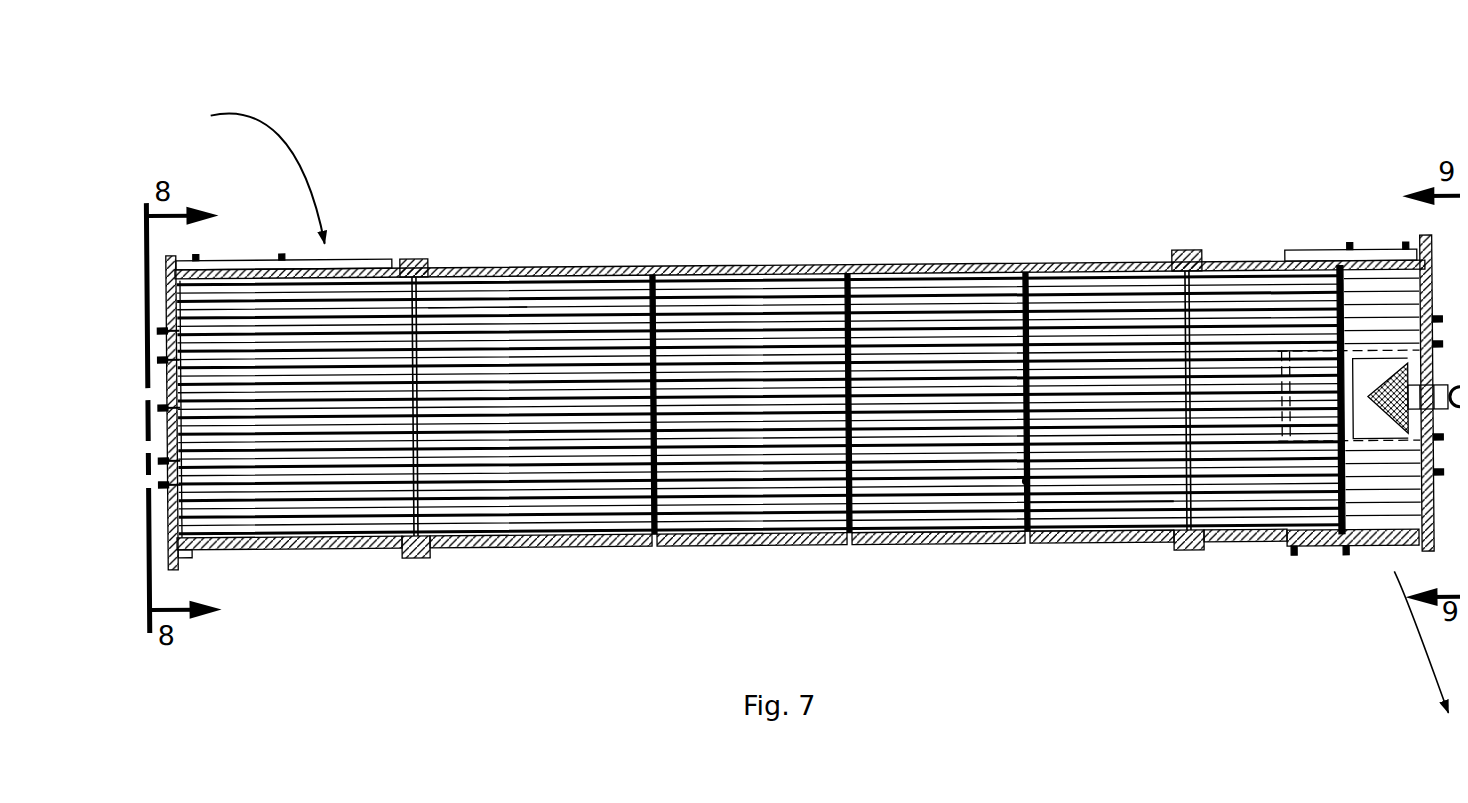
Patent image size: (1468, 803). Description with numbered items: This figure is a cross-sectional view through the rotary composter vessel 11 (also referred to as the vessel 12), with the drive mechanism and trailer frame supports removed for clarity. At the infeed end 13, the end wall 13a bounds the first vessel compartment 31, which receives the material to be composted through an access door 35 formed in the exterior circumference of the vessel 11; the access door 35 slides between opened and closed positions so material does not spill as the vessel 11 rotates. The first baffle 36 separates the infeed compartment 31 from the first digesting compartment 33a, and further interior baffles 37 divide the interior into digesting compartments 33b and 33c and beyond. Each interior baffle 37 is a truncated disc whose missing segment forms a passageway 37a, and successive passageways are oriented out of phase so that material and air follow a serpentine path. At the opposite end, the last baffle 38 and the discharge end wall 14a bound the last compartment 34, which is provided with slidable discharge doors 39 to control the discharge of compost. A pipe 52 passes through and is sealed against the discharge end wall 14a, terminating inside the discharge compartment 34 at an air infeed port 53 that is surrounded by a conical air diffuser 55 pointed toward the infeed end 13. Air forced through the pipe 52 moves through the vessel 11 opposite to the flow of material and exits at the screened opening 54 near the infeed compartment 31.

The vessel 11 is at (672, 262).
The vessel 12 is at (412, 257).
The infeed end 13 is at (190, 556).
The end wall 13a is at (166, 250).
The discharge end wall 14a is at (1410, 240).
The first vessel compartment 31 is at (286, 548).
The first digesting compartment 33a is at (514, 548).
The digesting compartment 33b is at (716, 545).
The digesting compartment 33c is at (1240, 545).
The last compartment 34 is at (1372, 565).
The access door 35 is at (276, 256).
The first baffle 36 is at (432, 300).
The interior baffle 37 is at (652, 298).
The passageway 37a is at (1021, 498).
The last baffle 38 is at (1366, 372).
The discharge doors 39 is at (1340, 240).
The pipe 52 is at (1455, 410).
The air infeed port 53 is at (1455, 382).
The screened opening 54 is at (176, 372).
The air diffuser 55 is at (1374, 368).